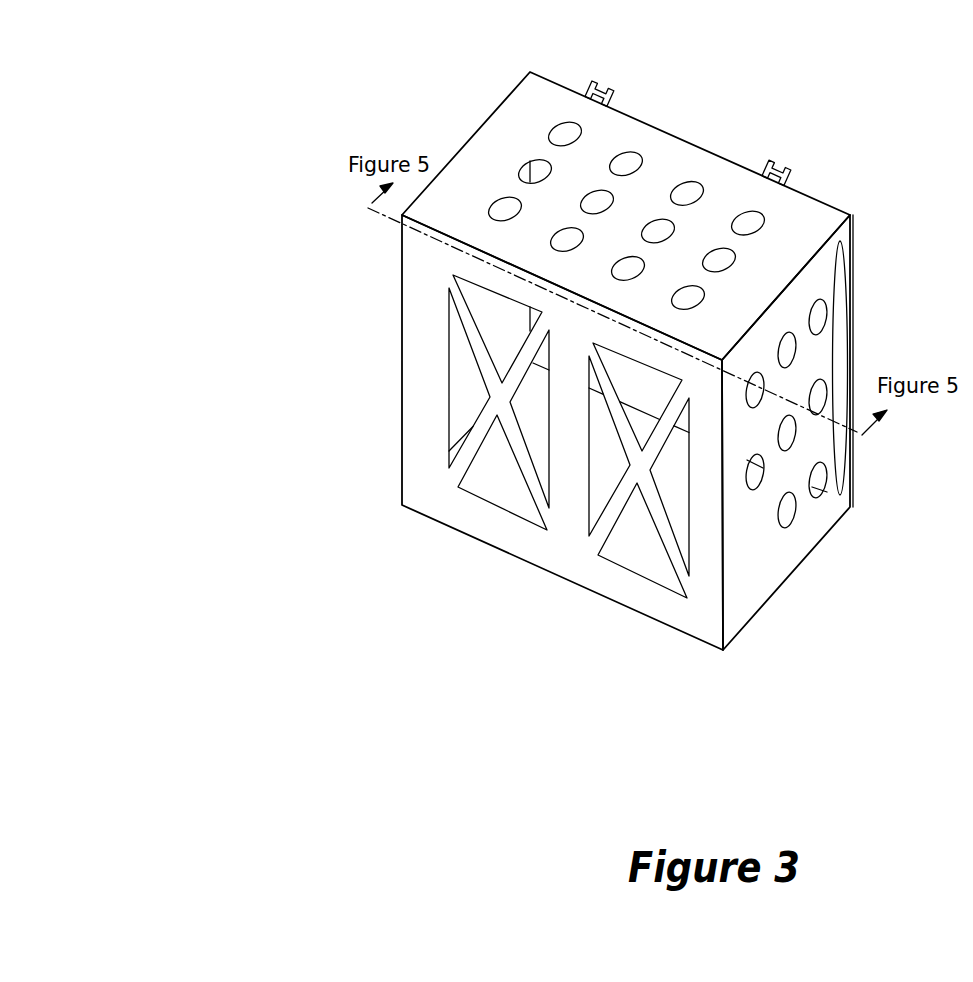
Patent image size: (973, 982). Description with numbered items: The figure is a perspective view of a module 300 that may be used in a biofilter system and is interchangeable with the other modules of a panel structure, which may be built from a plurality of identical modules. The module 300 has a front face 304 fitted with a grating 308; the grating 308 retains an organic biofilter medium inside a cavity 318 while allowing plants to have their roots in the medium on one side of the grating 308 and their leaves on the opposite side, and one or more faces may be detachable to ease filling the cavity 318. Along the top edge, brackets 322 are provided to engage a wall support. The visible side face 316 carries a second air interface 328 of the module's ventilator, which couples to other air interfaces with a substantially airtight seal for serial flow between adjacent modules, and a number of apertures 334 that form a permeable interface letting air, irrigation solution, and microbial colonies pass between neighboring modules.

The module 300 is at (216, 85).
The front face 304 is at (412, 365).
The grating 308 is at (467, 450).
The side face 316 is at (487, 176).
The cavity 318 is at (643, 538).
The bracket 322 is at (592, 79).
The second air interface 328 is at (838, 372).
The aperture 334 is at (787, 515).